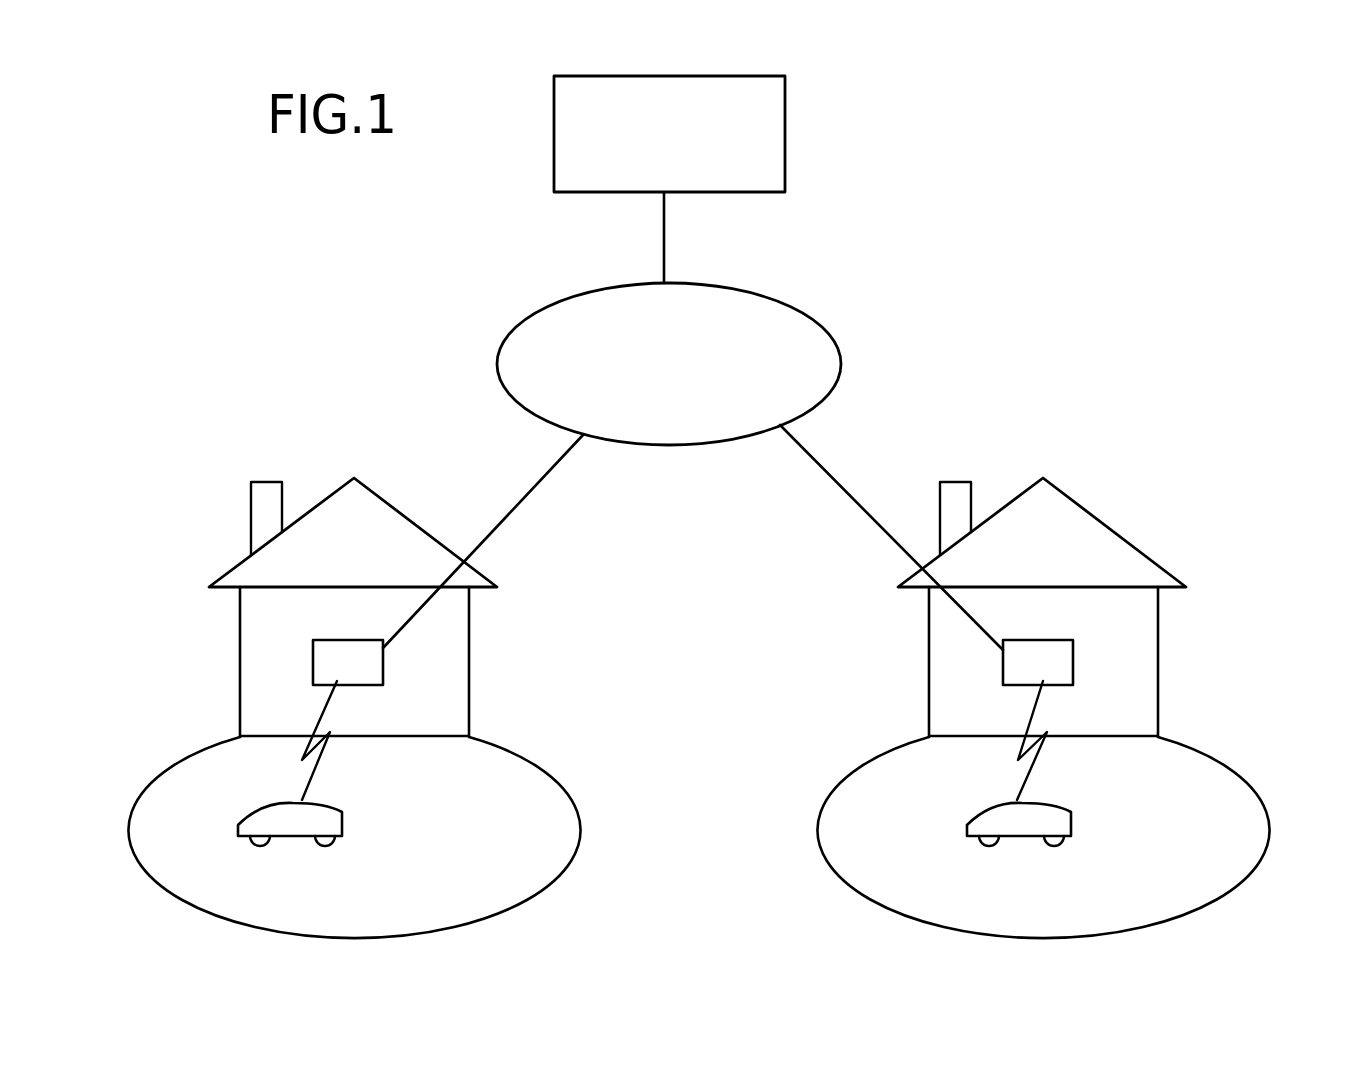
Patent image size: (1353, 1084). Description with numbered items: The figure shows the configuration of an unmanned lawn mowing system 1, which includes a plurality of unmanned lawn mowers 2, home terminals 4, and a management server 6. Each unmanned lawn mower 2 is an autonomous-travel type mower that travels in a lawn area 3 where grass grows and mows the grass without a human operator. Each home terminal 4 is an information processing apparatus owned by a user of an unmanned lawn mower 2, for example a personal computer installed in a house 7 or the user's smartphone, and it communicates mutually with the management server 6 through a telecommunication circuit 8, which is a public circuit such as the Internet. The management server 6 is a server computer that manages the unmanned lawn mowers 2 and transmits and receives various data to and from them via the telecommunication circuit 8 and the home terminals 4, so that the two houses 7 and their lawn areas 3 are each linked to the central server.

The unmanned lawn mowing system 1 is at (963, 132).
The unmanned lawn mower 2 is at (343, 815).
The lawn area 3 is at (513, 768).
The home terminal 4 is at (383, 660).
The management server 6 is at (785, 141).
The house 7 is at (407, 512).
The telecommunication circuit 8 is at (830, 331).